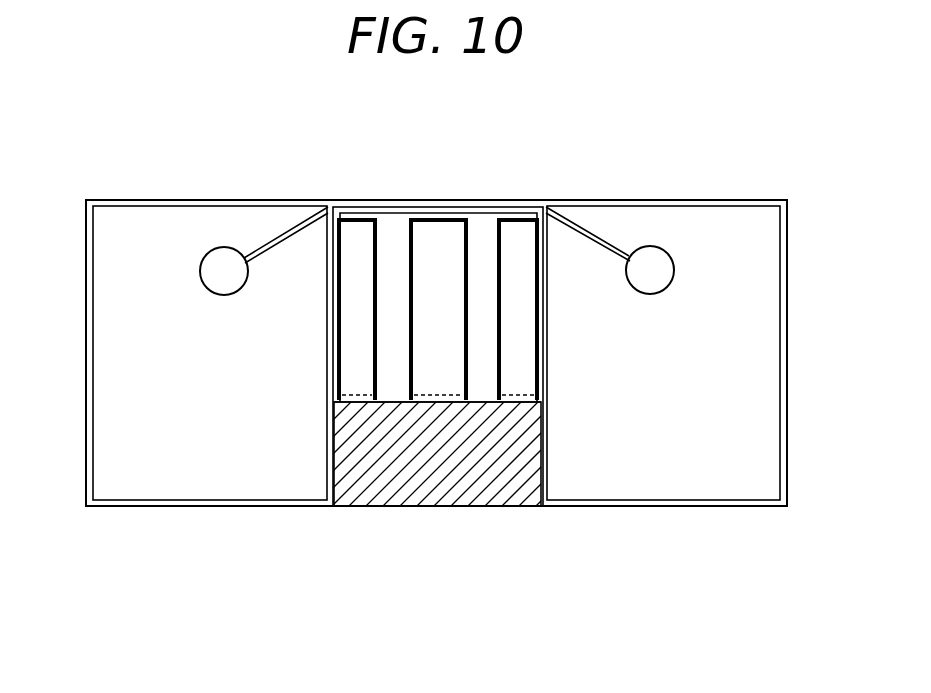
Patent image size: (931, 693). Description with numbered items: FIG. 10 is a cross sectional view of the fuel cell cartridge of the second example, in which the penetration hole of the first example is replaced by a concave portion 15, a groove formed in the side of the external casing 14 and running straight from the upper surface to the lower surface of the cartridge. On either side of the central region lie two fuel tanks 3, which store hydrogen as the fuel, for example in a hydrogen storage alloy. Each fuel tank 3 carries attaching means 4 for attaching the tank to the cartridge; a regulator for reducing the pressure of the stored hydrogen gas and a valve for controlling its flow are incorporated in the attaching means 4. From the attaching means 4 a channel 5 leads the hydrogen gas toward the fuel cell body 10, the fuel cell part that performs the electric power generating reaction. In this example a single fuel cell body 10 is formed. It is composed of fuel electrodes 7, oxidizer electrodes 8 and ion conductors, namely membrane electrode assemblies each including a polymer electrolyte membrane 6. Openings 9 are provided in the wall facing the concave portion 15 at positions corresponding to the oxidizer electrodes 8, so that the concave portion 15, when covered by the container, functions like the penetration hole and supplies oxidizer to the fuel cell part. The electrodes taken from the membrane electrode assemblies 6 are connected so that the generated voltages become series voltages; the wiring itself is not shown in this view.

The fuel tank 3 is at (135, 489).
The attaching means 4 is at (215, 261).
The channel 5 is at (298, 220).
The polymer electrolyte membrane 6 is at (506, 232).
The fuel electrode 7 is at (391, 227).
The oxidizer electrode 8 is at (350, 226).
The opening 9 is at (356, 398).
The fuel cell body 10 is at (565, 235).
The external casing 14 is at (687, 507).
The concave portion 15 is at (505, 484).